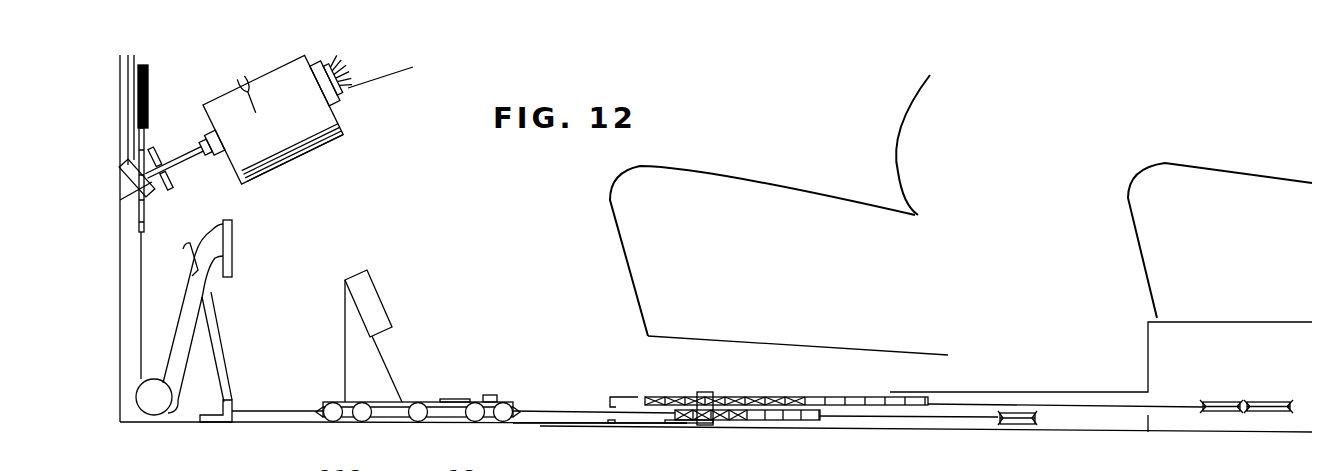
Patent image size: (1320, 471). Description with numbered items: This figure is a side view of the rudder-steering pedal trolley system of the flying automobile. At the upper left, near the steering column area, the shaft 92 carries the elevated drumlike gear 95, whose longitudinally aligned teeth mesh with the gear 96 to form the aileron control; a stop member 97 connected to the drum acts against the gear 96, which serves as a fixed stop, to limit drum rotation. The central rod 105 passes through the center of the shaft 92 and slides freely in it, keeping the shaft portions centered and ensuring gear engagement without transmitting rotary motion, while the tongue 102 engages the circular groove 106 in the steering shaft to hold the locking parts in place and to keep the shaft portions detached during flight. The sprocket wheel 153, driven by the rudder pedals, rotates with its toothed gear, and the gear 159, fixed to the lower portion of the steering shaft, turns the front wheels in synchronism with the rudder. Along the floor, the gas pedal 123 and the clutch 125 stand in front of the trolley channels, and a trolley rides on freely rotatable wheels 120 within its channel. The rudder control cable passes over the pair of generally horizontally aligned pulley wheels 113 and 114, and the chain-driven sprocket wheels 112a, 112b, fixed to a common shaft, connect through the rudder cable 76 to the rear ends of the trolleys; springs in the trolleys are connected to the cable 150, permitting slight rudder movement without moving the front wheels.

The sprocket wheel 153 is at (148, 78).
The tongue 102 is at (156, 148).
The central rod 105 is at (182, 156).
The circular groove 106 is at (216, 152).
The gear 159 is at (150, 190).
The gear 96 is at (271, 116).
The shaft 92 is at (338, 96).
The drumlike gear 95 is at (335, 120).
The stop member 97 is at (328, 150).
The clutch 125 is at (235, 246).
The gas pedal 123 is at (213, 325).
The cable 150 is at (272, 410).
The wheels 120 is at (505, 404).
The sprocket wheel 112a is at (668, 396).
The sprocket wheel 112b is at (692, 423).
The rudder cable 76 is at (917, 420).
The pulley wheel 114 is at (1225, 401).
The pulley wheel 113 is at (1267, 401).